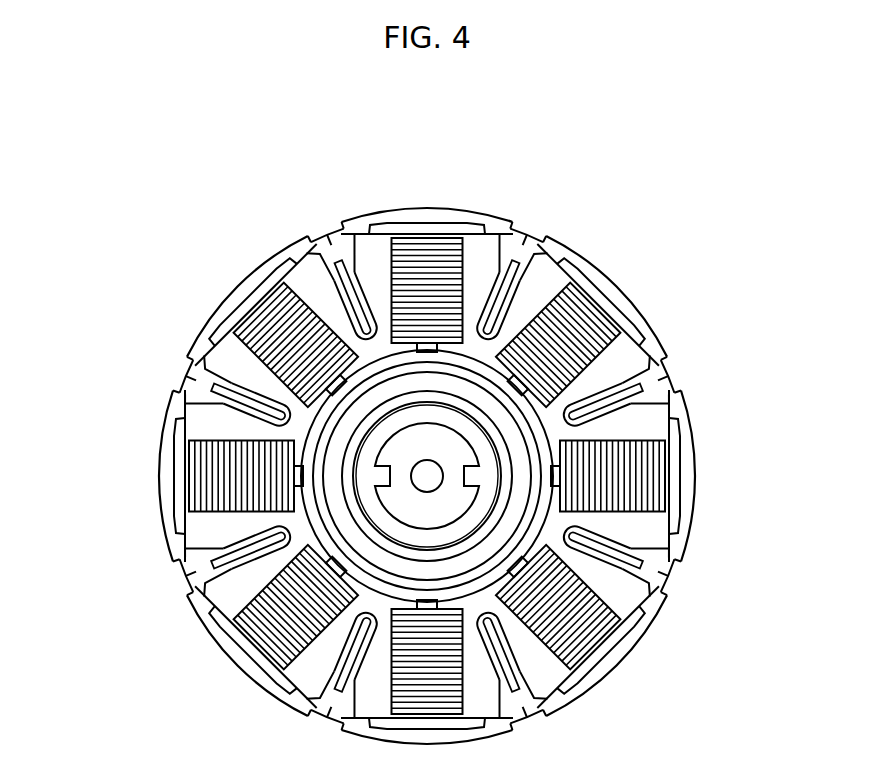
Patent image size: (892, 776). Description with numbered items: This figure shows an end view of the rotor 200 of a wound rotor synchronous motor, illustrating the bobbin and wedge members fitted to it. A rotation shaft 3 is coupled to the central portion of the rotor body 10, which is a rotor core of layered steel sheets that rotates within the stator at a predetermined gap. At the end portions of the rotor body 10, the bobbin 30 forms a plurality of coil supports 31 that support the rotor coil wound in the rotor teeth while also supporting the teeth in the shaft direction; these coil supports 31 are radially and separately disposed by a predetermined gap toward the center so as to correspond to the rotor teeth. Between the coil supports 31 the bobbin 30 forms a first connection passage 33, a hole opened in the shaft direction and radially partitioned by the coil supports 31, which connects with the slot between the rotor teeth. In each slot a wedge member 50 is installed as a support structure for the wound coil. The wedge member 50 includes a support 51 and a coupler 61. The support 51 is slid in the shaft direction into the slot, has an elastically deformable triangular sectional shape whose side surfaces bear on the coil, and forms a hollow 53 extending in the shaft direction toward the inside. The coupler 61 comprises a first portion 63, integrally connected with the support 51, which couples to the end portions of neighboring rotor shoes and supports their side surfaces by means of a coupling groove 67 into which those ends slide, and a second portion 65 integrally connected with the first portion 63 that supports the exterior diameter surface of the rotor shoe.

The rotor 200 is at (446, 142).
The rotation shaft 3 is at (452, 447).
The rotor body 10 is at (606, 691).
The bobbin 30 is at (248, 657).
The coil supports 31 is at (313, 645).
The first connection passage 33 is at (223, 525).
The wedge member 50 is at (391, 475).
The support 51 is at (246, 392).
The hollow 53 is at (258, 402).
The coupler 61 is at (116, 292).
The first portion 63 is at (192, 380).
The second portion 65 is at (186, 362).
The coupling groove 67 is at (178, 380).